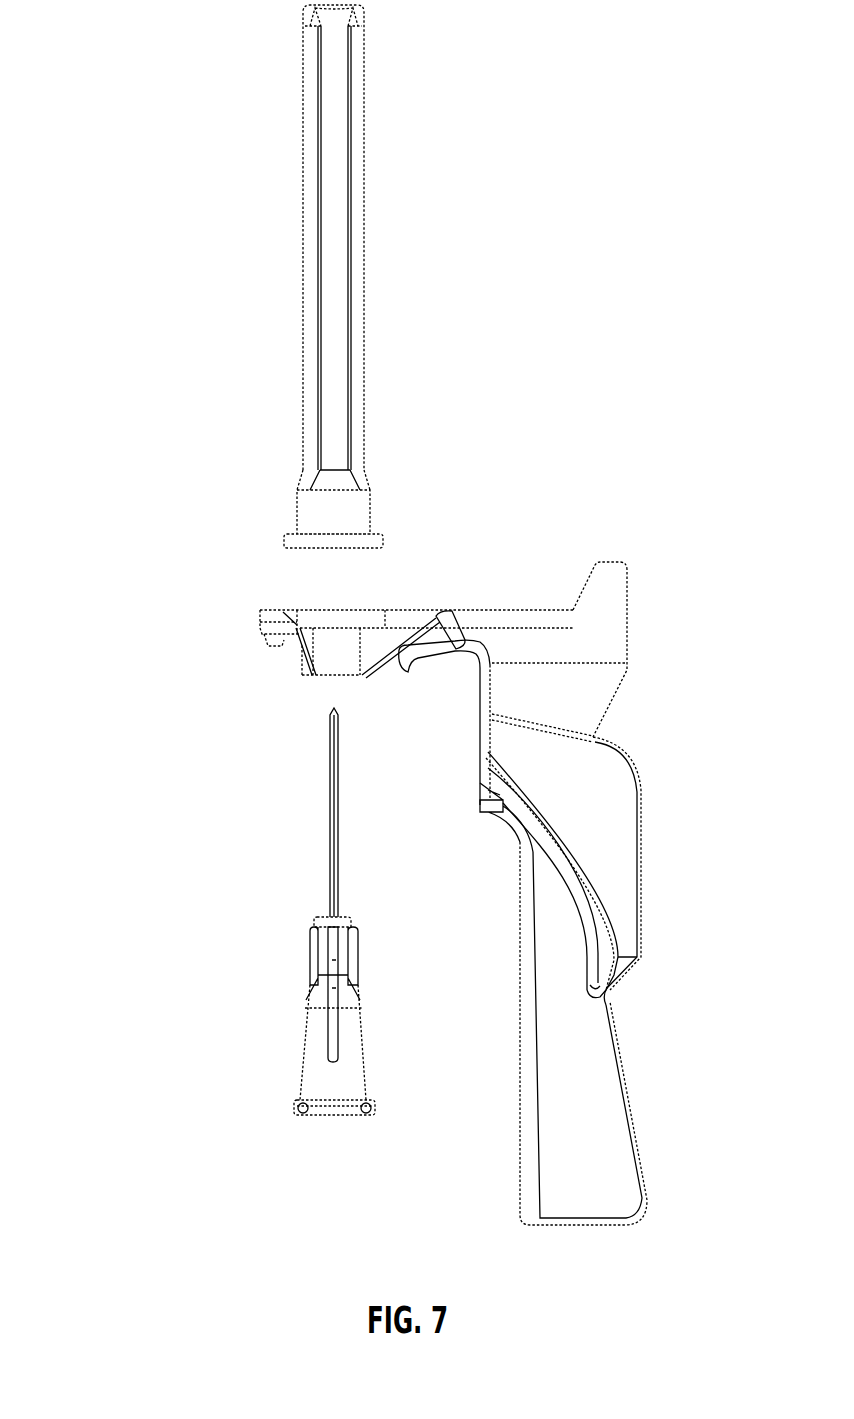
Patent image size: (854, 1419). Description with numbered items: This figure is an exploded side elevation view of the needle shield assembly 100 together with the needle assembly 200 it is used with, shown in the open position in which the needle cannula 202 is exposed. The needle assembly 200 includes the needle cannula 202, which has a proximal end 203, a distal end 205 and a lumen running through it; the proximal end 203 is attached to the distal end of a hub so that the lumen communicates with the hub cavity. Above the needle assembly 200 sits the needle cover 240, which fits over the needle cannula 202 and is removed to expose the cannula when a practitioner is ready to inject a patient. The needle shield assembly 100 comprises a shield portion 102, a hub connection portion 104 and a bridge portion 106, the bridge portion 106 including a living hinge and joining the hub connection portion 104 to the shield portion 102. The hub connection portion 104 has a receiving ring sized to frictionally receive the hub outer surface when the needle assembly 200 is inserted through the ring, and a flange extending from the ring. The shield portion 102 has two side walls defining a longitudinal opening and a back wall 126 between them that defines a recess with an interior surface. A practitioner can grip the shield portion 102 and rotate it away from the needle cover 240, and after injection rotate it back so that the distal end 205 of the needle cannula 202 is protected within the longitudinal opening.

The needle shield assembly 100 is at (147, 157).
The shield portion 102 is at (511, 1166).
The hub connection portion 104 is at (274, 591).
The bridge portion 106 is at (448, 600).
The back wall 126 is at (625, 1120).
The needle assembly 200 is at (264, 951).
The needle cannula 202 is at (330, 812).
The proximal end 203 is at (330, 913).
The distal end 205 is at (330, 723).
The needle cover 240 is at (365, 367).